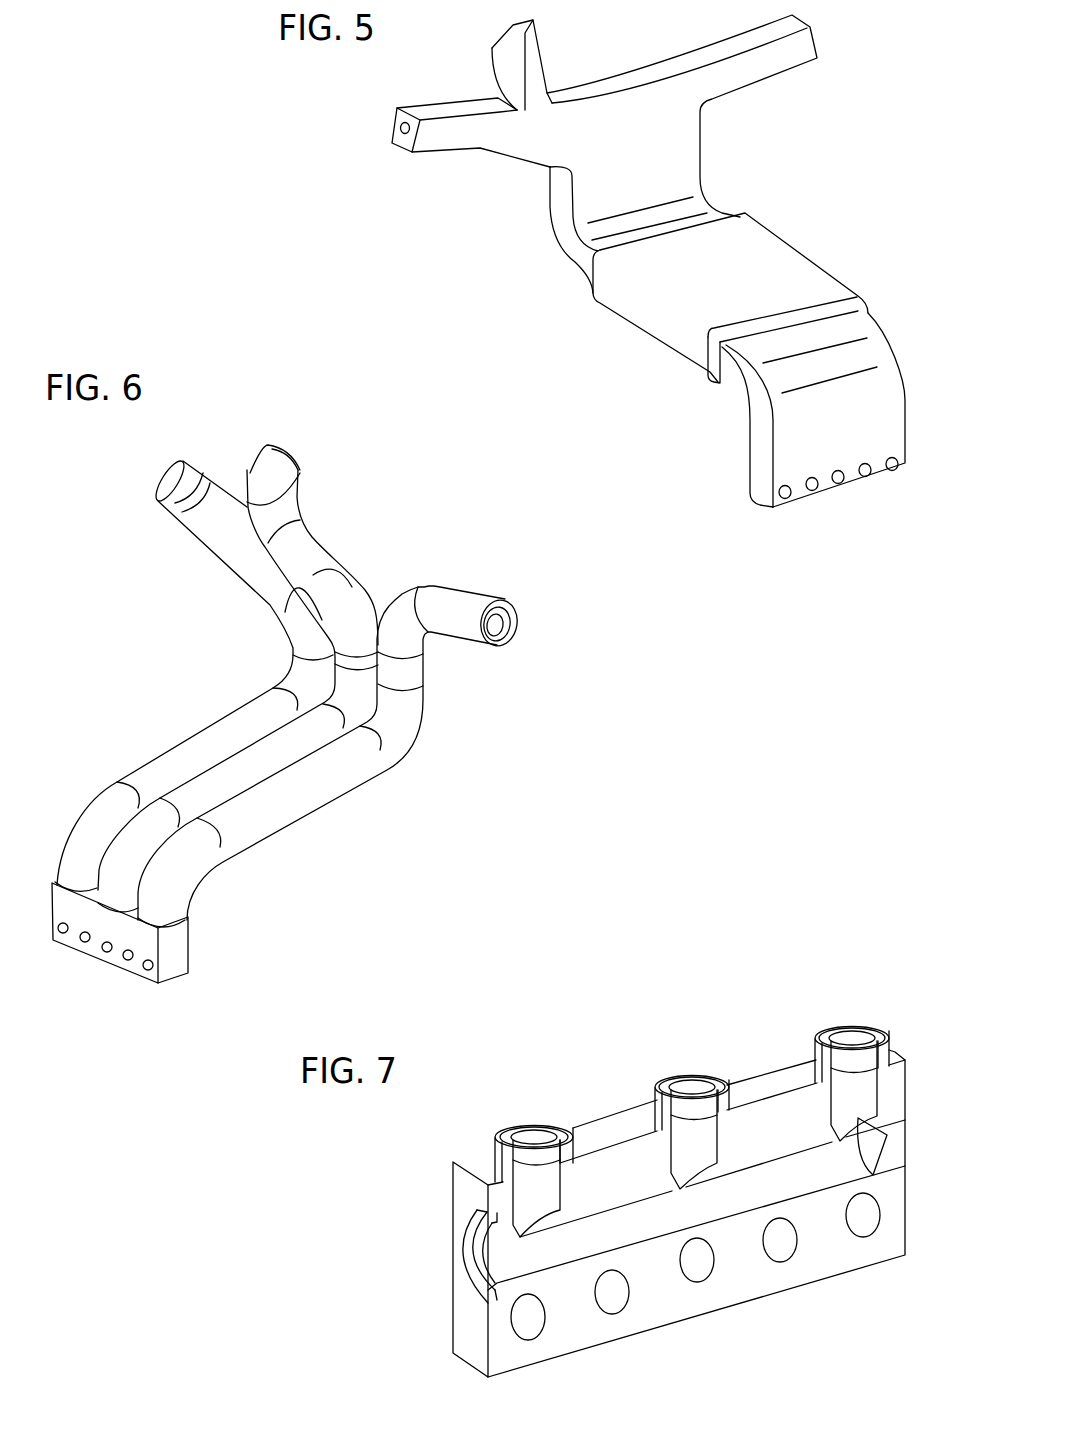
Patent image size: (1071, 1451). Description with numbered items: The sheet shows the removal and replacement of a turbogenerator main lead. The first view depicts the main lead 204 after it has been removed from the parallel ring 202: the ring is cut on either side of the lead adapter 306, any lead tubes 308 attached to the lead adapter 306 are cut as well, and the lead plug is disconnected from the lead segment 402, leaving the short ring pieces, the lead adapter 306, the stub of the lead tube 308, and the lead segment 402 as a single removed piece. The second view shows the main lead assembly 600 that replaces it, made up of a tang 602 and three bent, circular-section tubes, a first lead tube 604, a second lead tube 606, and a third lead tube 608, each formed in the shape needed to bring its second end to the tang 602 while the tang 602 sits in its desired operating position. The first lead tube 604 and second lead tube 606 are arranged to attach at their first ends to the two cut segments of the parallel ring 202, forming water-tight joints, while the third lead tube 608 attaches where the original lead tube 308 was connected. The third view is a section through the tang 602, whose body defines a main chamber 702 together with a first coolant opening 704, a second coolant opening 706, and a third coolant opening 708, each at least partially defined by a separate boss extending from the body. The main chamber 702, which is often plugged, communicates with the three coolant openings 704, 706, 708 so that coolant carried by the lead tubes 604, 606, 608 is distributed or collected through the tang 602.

In FIG. 5, the parallel ring 202 is at (448, 133).
In FIG. 5, the main lead 204 is at (481, 273).
In FIG. 5, the lead adapter 306 is at (640, 150).
In FIG. 5, the lead tube 308 is at (532, 55).
In FIG. 5, the lead segment 402 is at (757, 260).
In FIG. 6, the main lead assembly 600 is at (417, 547).
In FIG. 6, the tang 602 is at (102, 927).
In FIG. 7, the tang 602 is at (735, 1270).
In FIG. 6, the first lead tube 604 is at (220, 535).
In FIG. 6, the second lead tube 606 is at (300, 792).
In FIG. 6, the third lead tube 608 is at (312, 557).
In FIG. 7, the main chamber 702 is at (513, 1257).
In FIG. 7, the first coolant opening 704 is at (528, 1145).
In FIG. 7, the second coolant opening 706 is at (853, 1040).
In FIG. 7, the third coolant opening 708 is at (693, 1097).